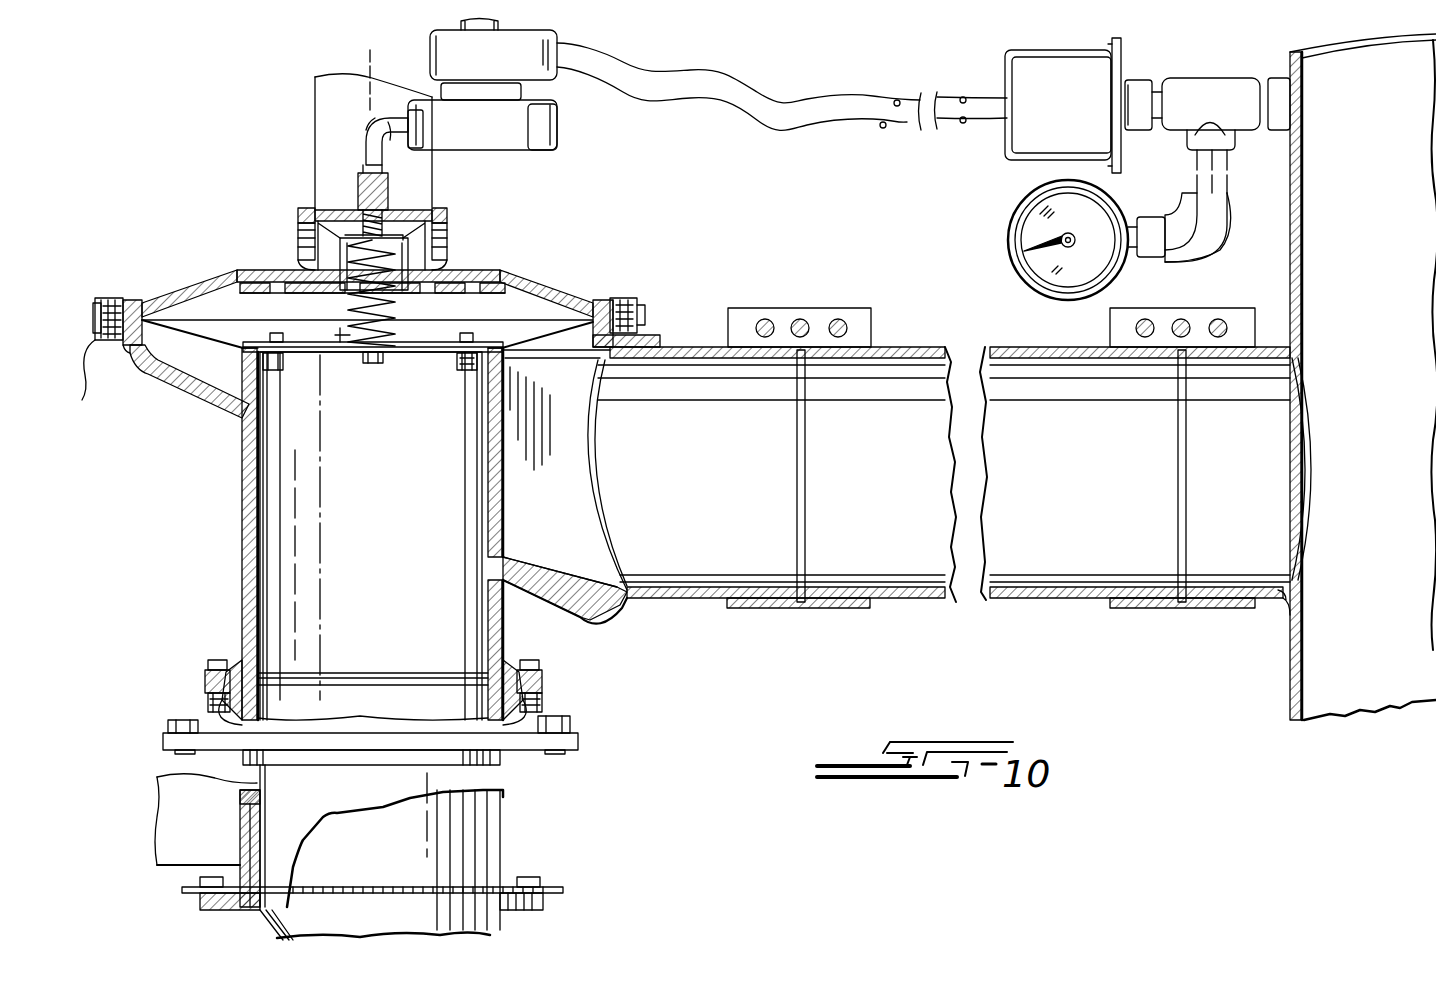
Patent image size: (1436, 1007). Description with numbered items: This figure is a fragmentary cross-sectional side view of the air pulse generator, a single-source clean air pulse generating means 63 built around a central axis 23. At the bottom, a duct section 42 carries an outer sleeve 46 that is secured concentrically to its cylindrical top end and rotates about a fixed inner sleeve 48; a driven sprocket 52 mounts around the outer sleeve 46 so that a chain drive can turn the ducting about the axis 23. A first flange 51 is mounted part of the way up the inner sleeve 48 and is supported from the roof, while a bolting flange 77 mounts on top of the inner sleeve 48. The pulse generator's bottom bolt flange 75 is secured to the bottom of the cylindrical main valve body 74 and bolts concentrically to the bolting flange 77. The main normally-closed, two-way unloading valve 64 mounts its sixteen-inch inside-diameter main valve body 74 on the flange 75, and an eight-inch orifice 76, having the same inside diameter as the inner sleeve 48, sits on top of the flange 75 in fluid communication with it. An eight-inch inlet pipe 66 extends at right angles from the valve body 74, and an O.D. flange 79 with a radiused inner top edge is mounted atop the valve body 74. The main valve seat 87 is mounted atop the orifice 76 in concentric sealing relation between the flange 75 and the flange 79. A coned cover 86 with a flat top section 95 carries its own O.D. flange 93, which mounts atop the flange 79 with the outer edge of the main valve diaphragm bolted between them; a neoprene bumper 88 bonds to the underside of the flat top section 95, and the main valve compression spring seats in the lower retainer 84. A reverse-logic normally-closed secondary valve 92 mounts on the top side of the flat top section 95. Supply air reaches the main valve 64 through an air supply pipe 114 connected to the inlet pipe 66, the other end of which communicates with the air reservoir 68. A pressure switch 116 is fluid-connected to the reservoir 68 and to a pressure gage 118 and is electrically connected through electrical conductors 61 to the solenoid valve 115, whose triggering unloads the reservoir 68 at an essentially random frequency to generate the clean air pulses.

The axis 23 is at (368, 62).
The duct section 42 is at (260, 920).
The outer sleeve 46 is at (240, 843).
The inner sleeve 48 is at (250, 773).
The first flange 51 is at (578, 745).
The driven sprocket 52 is at (182, 888).
The electrical conductors 61 is at (825, 122).
The single-source clean air pulse generating means 63 is at (235, 230).
The main normally-closed two-way unloading valve 64 is at (225, 280).
The inlet pipe 66 is at (672, 605).
The air reservoir 68 is at (1288, 678).
The main valve body 74 is at (240, 545).
The bottom bolt flange 75 is at (205, 680).
The orifice 76 is at (268, 380).
The bolting flange 77 is at (205, 690).
The O.D. flange 79 is at (100, 348).
The lower retainer 84 is at (332, 332).
The coned cover 86 is at (538, 287).
The main valve seat 87 is at (462, 372).
The neoprene bumper 88 is at (438, 288).
The secondary valve 92 is at (447, 220).
The O.D. flange 93 is at (140, 300).
The flat top section 95 is at (478, 270).
The air supply pipe 114 is at (902, 345).
The solenoid valve 115 is at (560, 31).
The pressure switch 116 is at (1020, 165).
The pressure gage 118 is at (1010, 237).